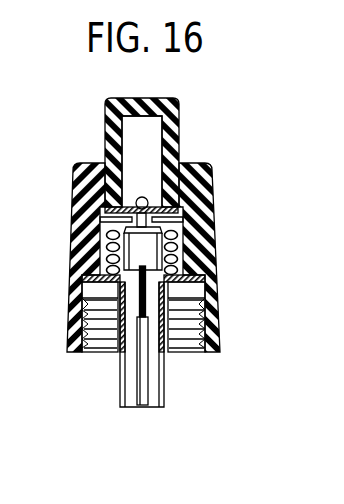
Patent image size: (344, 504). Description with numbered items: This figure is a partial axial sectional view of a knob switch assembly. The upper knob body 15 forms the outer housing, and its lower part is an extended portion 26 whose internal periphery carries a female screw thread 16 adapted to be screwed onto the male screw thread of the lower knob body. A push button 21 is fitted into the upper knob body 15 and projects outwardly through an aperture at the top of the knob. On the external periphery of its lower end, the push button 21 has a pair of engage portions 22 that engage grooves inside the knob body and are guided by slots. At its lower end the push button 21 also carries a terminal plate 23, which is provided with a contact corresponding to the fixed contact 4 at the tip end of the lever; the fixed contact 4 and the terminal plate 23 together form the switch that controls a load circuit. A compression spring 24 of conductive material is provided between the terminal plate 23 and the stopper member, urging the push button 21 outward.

The fixed contact 4 is at (205, 233).
The upper knob body 15 is at (75, 172).
The female screw thread 16 is at (101, 345).
The push button 21 is at (168, 99).
The engage portions 22 is at (103, 212).
The terminal plate 23 is at (179, 152).
The compression spring 24 is at (100, 248).
The extended portion 26 is at (222, 334).